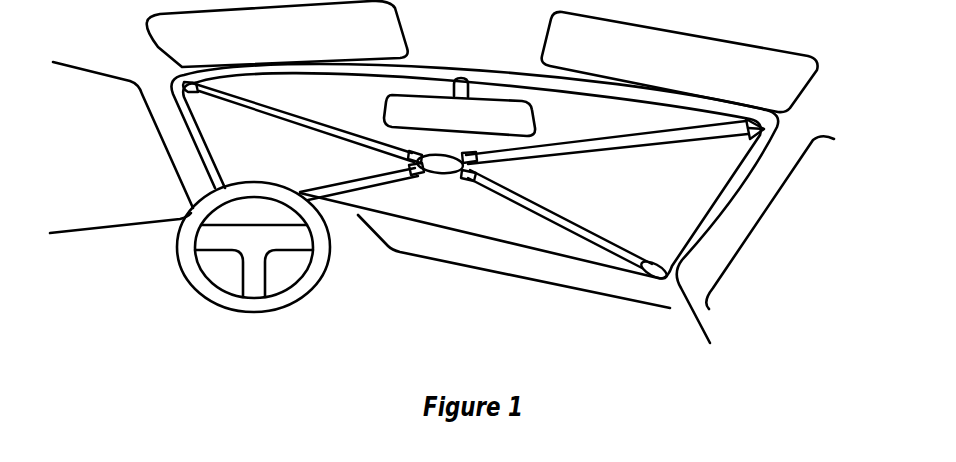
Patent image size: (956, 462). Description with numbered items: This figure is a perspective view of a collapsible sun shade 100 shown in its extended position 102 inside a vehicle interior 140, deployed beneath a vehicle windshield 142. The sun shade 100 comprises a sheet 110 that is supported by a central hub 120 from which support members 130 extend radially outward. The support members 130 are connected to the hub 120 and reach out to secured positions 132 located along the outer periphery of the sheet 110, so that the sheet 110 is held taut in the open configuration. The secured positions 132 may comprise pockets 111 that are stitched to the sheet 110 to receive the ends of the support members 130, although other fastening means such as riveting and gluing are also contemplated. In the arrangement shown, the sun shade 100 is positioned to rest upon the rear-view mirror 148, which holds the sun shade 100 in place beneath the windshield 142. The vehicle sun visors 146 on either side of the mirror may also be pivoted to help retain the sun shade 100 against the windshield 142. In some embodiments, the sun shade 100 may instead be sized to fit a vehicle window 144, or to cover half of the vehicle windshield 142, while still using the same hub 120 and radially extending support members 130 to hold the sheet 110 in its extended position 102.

The collapsible sun shade 100 is at (697, 178).
The extended position 102 is at (295, 161).
The sheet 110 is at (660, 204).
The pockets 111 is at (775, 121).
The hub 120 is at (443, 168).
The support members 130 is at (586, 232).
The secured positions 132 is at (648, 276).
The vehicle interior 140 is at (425, 285).
The vehicle windshield 142 is at (481, 221).
The vehicle window 144 is at (121, 201).
The vehicle sun visors 146 is at (288, 47).
The rear-view mirror 148 is at (473, 127).